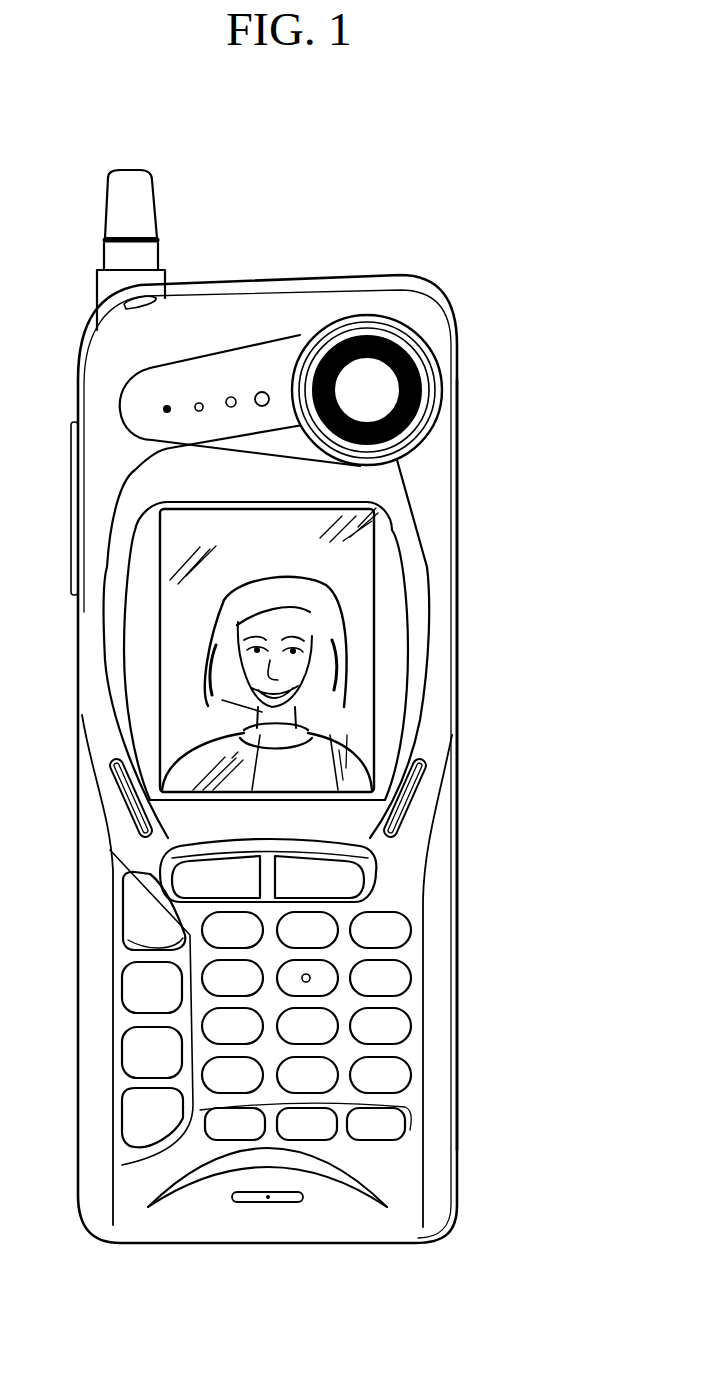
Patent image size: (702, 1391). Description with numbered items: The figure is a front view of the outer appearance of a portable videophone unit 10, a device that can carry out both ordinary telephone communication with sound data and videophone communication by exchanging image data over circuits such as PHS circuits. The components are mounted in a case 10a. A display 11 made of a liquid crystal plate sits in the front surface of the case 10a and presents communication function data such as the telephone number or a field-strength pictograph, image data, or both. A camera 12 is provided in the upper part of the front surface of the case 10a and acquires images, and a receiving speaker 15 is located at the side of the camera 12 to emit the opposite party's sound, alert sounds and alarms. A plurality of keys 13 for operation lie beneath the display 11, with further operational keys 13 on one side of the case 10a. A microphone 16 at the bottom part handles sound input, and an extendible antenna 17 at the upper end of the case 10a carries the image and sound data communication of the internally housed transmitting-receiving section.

The portable videophone unit 10 is at (468, 232).
The case 10a is at (456, 688).
The display 11 is at (357, 628).
The camera 12 is at (382, 385).
The keys 13 is at (390, 935).
The receiving speaker 15 is at (232, 400).
The microphone 16 is at (265, 1205).
The antenna 17 is at (132, 195).